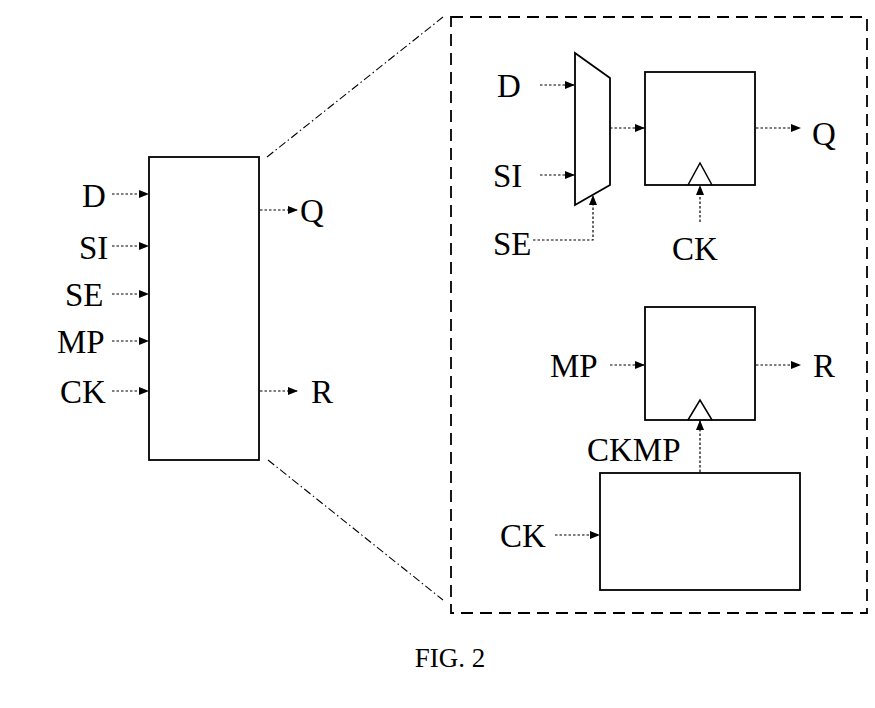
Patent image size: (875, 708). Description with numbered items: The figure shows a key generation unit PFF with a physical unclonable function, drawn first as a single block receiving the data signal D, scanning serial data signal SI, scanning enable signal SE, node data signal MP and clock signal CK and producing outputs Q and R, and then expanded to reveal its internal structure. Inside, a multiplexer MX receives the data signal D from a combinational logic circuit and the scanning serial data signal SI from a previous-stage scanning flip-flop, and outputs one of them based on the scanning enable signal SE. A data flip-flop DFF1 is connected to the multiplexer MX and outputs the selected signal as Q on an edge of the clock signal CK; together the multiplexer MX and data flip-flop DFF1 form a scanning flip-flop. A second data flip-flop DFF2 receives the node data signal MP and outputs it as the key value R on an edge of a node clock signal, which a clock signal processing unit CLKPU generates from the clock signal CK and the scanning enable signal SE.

The key generation unit PFF is at (204, 308).
The multiplexer MX is at (591, 112).
The data flip-flop DFF1 is at (700, 128).
The data flip-flop DFF2 is at (700, 363).
The clock signal processing unit CLKPU is at (700, 531).